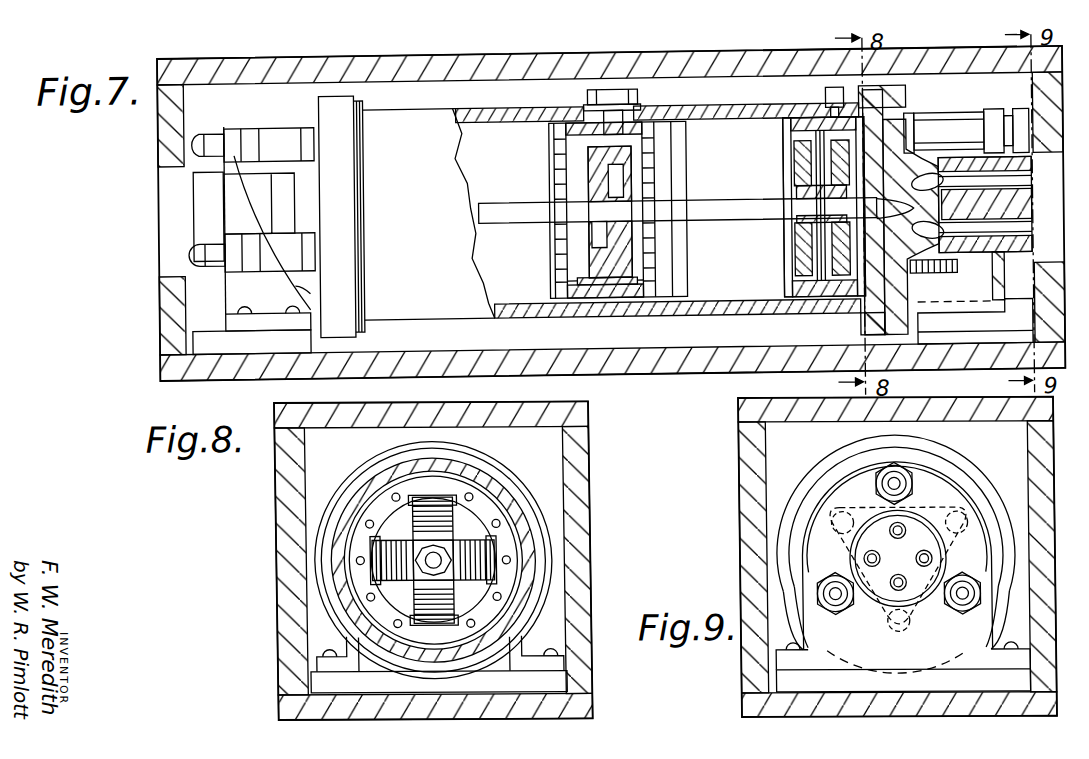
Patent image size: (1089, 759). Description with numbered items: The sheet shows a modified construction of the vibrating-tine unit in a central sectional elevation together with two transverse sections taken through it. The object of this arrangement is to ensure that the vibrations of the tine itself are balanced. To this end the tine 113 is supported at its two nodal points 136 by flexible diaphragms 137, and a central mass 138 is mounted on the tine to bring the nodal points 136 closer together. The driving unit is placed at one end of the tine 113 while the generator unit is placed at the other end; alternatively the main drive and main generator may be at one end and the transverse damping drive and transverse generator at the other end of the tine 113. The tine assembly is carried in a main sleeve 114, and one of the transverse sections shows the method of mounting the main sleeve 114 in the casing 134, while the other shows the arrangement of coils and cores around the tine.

In FIG. 7, the tine 113 is at (532, 229).
In FIG. 7, the main sleeve 114 is at (690, 316).
In FIG. 8, the main sleeve 114 is at (465, 467).
In FIG. 9, the main sleeve 114 is at (975, 480).
In FIG. 7, the casing 134 is at (693, 381).
In FIG. 8, the casing 134 is at (588, 458).
In FIG. 9, the casing 134 is at (738, 490).
In FIG. 7, the nodal points 136 is at (663, 214).
In FIG. 7, the flexible diaphragms 137 is at (657, 255).
In FIG. 7, the central mass 138 is at (607, 153).